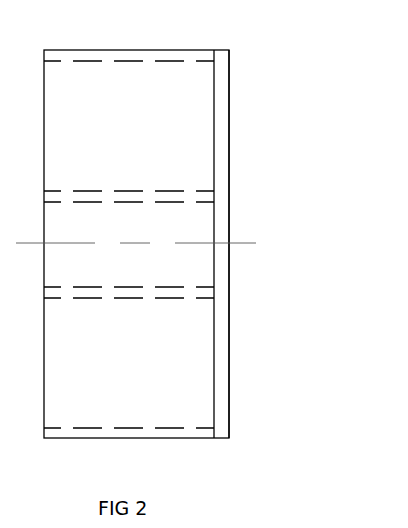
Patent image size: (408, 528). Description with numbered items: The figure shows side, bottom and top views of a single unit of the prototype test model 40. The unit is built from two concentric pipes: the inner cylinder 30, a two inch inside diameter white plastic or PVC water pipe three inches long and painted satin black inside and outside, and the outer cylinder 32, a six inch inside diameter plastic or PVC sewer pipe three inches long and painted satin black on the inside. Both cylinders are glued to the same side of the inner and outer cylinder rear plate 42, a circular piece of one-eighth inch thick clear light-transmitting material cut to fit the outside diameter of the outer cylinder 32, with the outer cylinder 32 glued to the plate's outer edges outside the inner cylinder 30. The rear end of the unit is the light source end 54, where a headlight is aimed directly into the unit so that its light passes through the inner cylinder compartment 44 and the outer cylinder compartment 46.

The prototype test model unit 40 is at (199, 49).
The light source end 54 is at (230, 90).
The inner and outer cylinder rear plate 42 is at (231, 274).
The outer cylinder 32 is at (144, 49).
The inner cylinder 30 is at (185, 194).
The outer cylinder compartment 46 is at (193, 130).
The inner cylinder compartment 44 is at (196, 222).